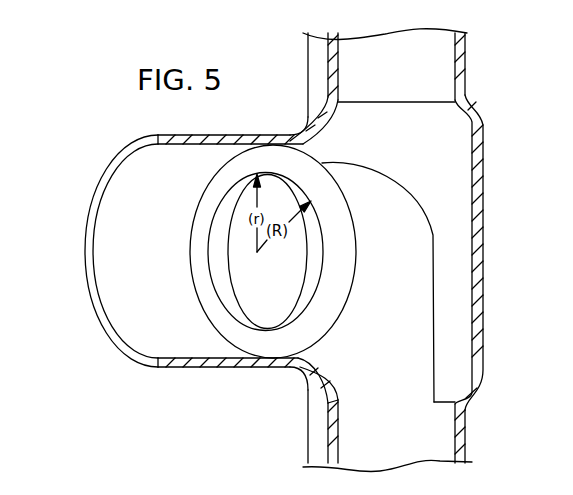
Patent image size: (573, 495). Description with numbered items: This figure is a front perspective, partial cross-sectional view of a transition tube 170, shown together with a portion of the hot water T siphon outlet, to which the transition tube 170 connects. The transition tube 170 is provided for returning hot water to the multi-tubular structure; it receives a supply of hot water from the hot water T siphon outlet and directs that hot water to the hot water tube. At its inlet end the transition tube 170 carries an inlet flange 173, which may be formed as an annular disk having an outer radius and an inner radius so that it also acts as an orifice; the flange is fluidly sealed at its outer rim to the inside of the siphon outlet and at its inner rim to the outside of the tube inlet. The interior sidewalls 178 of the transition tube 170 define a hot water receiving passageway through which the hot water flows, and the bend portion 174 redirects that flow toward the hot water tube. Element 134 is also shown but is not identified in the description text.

The boss housing 134 is at (87, 262).
The inlet flange 173 is at (197, 241).
The interior sidewalls 178 is at (248, 291).
The bend portion 174 is at (427, 235).
The transition tube 170 is at (435, 371).